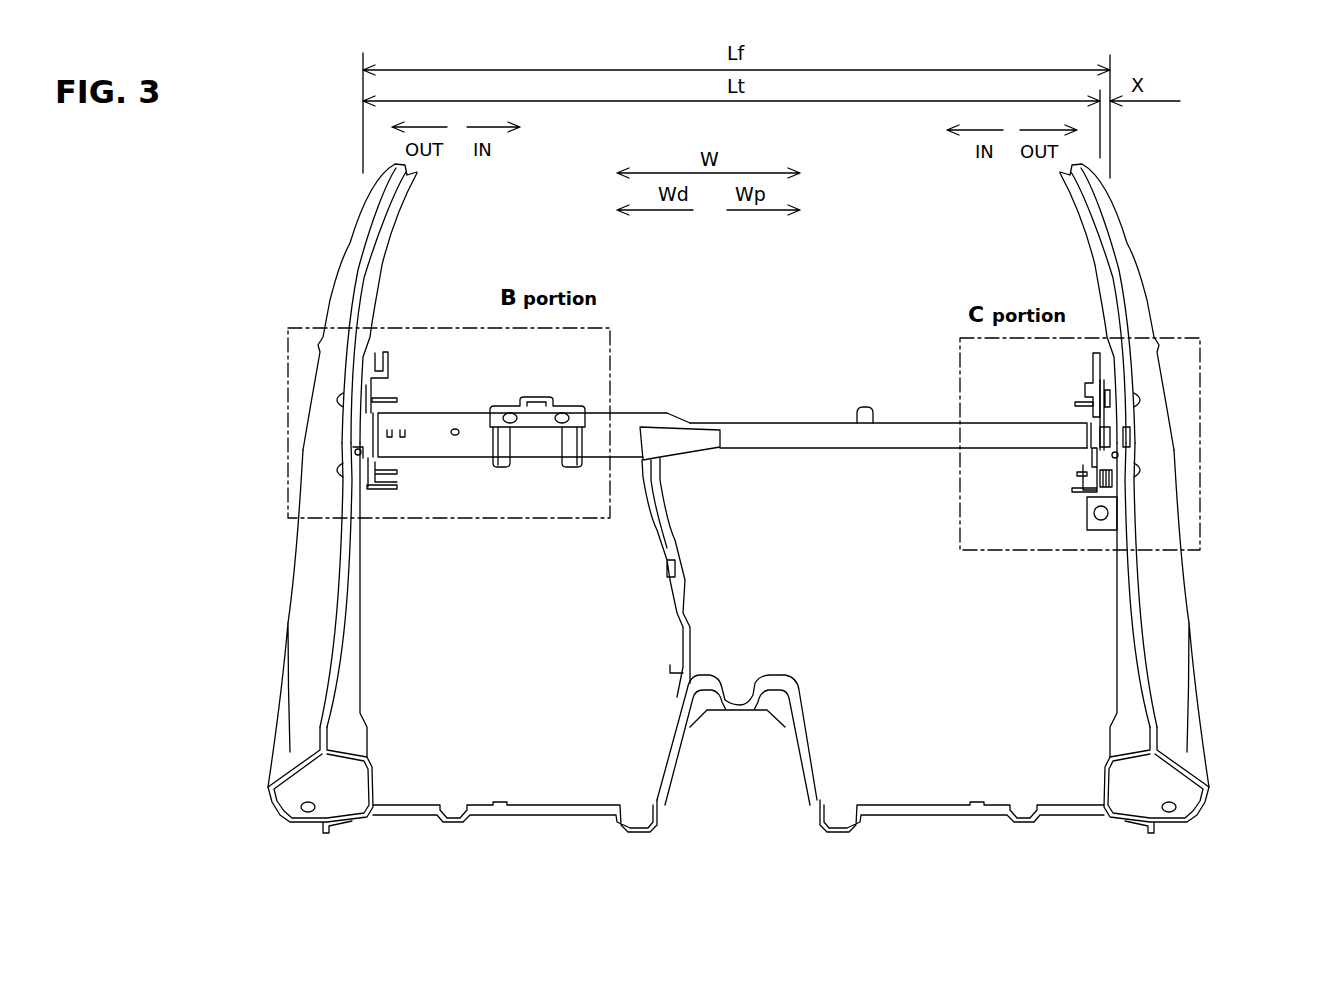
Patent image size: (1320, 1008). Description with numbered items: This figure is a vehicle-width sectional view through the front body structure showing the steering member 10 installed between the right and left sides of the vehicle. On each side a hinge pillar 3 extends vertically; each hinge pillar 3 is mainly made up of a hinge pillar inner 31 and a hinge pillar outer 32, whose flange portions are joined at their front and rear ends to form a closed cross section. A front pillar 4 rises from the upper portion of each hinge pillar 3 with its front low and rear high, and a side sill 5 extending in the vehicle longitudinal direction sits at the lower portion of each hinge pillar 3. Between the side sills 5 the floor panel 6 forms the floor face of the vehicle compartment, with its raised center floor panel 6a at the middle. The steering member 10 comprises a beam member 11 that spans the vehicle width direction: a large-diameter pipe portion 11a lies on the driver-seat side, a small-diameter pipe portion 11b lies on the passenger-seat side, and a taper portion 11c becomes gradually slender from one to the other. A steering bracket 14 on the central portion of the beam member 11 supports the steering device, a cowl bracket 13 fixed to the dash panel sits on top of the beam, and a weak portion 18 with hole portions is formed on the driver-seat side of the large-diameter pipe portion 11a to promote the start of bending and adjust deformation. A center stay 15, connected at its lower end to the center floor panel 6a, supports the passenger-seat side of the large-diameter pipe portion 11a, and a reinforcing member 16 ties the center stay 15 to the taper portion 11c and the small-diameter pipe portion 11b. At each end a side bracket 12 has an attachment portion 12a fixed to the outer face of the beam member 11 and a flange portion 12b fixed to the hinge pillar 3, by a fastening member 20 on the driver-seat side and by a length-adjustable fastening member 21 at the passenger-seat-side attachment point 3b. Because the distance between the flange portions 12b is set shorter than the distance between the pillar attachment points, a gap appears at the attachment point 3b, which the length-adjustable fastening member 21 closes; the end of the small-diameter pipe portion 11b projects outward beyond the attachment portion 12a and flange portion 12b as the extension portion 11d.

The hinge pillar 3 is at (1112, 543).
The passenger-seat-side attachment point 3b is at (1130, 443).
The front pillar 4 is at (1122, 237).
The side sill 5 is at (1207, 793).
The floor panel 6 is at (971, 807).
The center floor panel 6a is at (808, 727).
The steering member 10 is at (813, 378).
The beam member 11 is at (890, 426).
The large-diameter pipe portion 11a is at (477, 460).
The small-diameter pipe portion 11b is at (813, 448).
The taper portion 11c is at (663, 412).
The extension portion 11d is at (1110, 435).
The side bracket 12 is at (1069, 468).
The attachment portion 12a is at (1087, 423).
The flange portion 12b is at (1087, 390).
The cowl bracket 13 is at (867, 405).
The steering bracket 14 is at (566, 405).
The center stay 15 is at (652, 530).
The reinforcing member 16 is at (683, 430).
The weak portion 18 is at (403, 440).
The fastening member 20 is at (337, 470).
The length-adjustable fastening member 21 is at (1146, 470).
The hinge pillar inner 31 is at (1120, 616).
The hinge pillar outer 32 is at (1175, 592).